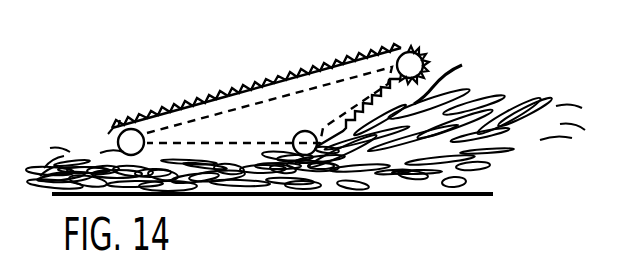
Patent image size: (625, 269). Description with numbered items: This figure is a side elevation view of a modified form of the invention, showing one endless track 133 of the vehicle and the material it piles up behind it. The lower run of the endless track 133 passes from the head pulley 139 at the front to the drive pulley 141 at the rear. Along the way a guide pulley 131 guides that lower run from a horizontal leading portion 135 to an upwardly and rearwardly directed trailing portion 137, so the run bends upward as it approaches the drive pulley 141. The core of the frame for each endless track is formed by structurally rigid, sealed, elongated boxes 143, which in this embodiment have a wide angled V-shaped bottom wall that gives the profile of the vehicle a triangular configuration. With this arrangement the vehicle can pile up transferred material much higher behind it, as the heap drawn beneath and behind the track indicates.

The guide pulley 131 is at (305, 140).
The endless track 133 is at (256, 79).
The horizontal leading portion 135 is at (213, 152).
The upwardly and rearwardly directed trailing portion 137 is at (456, 68).
The head pulley 139 is at (129, 141).
The drive pulley 141 is at (413, 64).
The structurally rigid, sealed, elongated boxes 143 is at (222, 88).